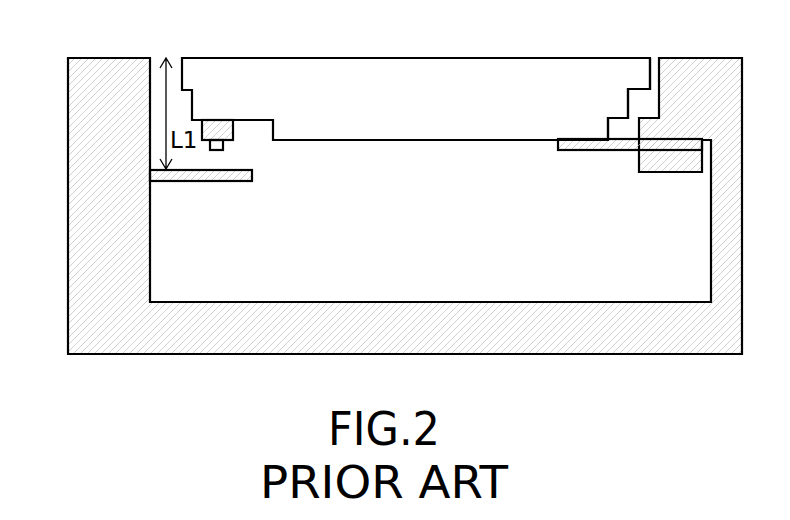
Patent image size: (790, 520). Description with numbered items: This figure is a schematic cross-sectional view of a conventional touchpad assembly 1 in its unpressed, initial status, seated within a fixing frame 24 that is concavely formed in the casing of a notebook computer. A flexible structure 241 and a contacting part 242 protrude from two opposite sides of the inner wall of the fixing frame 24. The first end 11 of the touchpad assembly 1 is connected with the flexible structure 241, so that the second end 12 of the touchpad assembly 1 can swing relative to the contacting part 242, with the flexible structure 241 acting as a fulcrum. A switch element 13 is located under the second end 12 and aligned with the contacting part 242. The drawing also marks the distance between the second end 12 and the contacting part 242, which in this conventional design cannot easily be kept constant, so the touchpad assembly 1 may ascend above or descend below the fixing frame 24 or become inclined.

The touchpad assembly 1 is at (452, 62).
The first end 11 is at (582, 130).
The second end 12 is at (217, 108).
The switch element 13 is at (222, 128).
The fixing frame 24 is at (97, 72).
The flexible structure 241 is at (587, 145).
The contacting part 242 is at (212, 175).